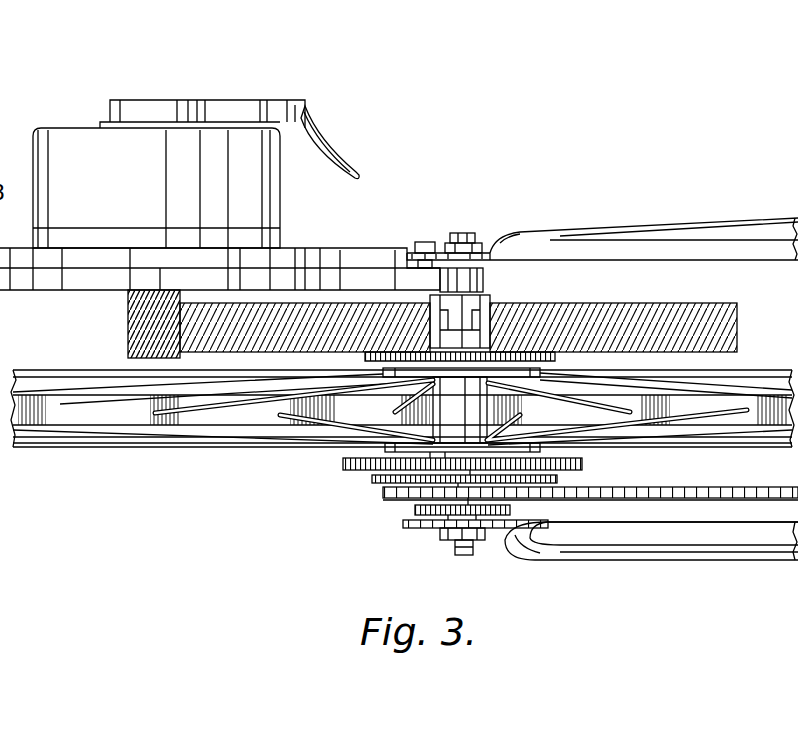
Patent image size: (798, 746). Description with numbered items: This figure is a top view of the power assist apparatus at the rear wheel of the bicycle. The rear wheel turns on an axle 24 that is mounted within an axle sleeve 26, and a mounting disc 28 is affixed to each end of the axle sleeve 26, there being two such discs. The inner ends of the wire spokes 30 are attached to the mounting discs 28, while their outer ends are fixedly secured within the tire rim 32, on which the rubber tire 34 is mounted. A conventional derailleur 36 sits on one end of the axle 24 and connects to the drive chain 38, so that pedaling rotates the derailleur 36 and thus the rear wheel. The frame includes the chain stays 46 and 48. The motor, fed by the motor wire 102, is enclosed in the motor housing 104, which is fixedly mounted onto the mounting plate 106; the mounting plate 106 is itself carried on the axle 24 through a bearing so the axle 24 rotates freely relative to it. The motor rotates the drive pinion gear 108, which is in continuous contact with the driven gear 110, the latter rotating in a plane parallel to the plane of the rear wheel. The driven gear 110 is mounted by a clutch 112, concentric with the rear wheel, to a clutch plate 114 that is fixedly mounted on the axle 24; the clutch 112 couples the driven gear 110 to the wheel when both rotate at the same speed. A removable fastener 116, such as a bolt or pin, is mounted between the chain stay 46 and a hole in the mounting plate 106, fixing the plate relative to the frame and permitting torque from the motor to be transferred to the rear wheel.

The axle 24 is at (462, 556).
The axle sleeve 26 is at (570, 412).
The mounting disc 28 is at (350, 438).
The wire spokes 30 is at (720, 410).
The tire rim 32 is at (112, 435).
The rubber tire 34 is at (182, 445).
The derailleur 36 is at (372, 490).
The drive chain 38 is at (785, 488).
The chain stay 46 is at (718, 224).
The chain stay 48 is at (700, 560).
The motor wire 102 is at (328, 150).
The motor housing 104 is at (80, 138).
The mounting plate 106 is at (392, 270).
The drive pinion gear 108 is at (130, 345).
The driven gear 110 is at (658, 305).
The clutch 112 is at (470, 318).
The clutch plate 114 is at (515, 348).
The fastener 116 is at (430, 242).